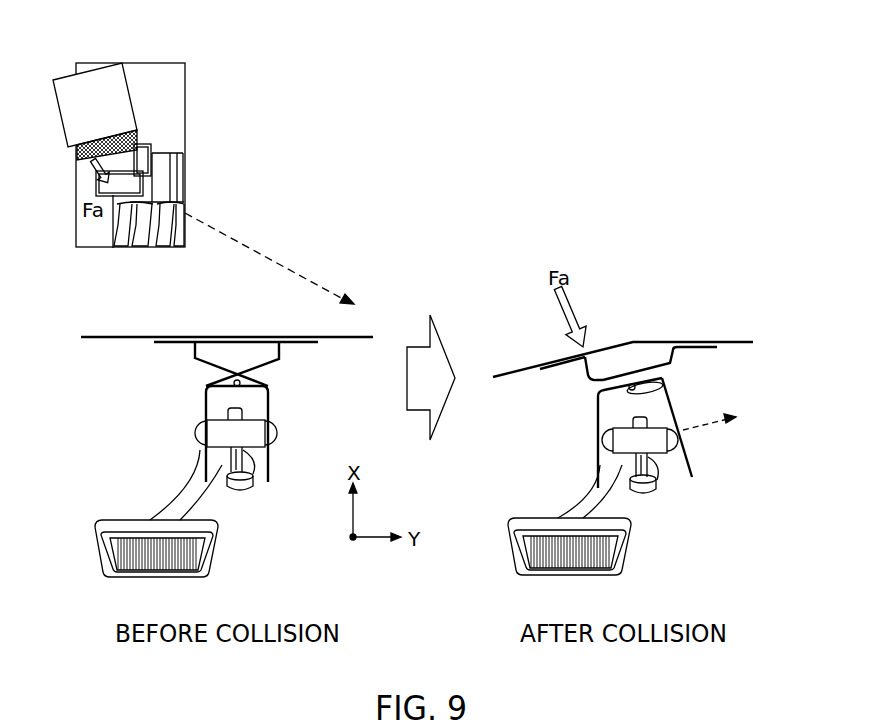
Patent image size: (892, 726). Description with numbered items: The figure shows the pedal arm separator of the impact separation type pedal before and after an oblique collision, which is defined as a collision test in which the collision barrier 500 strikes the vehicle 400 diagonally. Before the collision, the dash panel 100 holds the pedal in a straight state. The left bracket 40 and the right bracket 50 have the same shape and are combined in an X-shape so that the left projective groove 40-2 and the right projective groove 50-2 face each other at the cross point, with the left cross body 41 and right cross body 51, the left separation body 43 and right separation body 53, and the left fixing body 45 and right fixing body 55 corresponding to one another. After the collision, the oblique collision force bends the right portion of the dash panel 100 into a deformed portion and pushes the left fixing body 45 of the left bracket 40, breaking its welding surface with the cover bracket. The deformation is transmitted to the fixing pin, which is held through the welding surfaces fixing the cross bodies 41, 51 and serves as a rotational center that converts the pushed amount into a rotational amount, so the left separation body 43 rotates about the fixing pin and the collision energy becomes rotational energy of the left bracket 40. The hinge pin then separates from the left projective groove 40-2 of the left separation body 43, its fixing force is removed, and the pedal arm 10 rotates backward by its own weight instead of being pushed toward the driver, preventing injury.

The pedal arm 10 is at (170, 490).
The left bracket 40 is at (192, 355).
The left cross body 41 is at (598, 378).
The left separation body 43 is at (683, 448).
The left fixing body 45 is at (563, 358).
The right bracket 50 is at (207, 480).
The right projective groove 50-2 is at (593, 438).
The right cross body 51 is at (653, 383).
The right separation body 53 is at (598, 410).
The right fixing body 55 is at (693, 345).
The left projective groove 40-2 is at (683, 430).
The dash panel 100 is at (105, 337).
The vehicle 400 is at (175, 183).
The collision barrier 500 is at (118, 85).